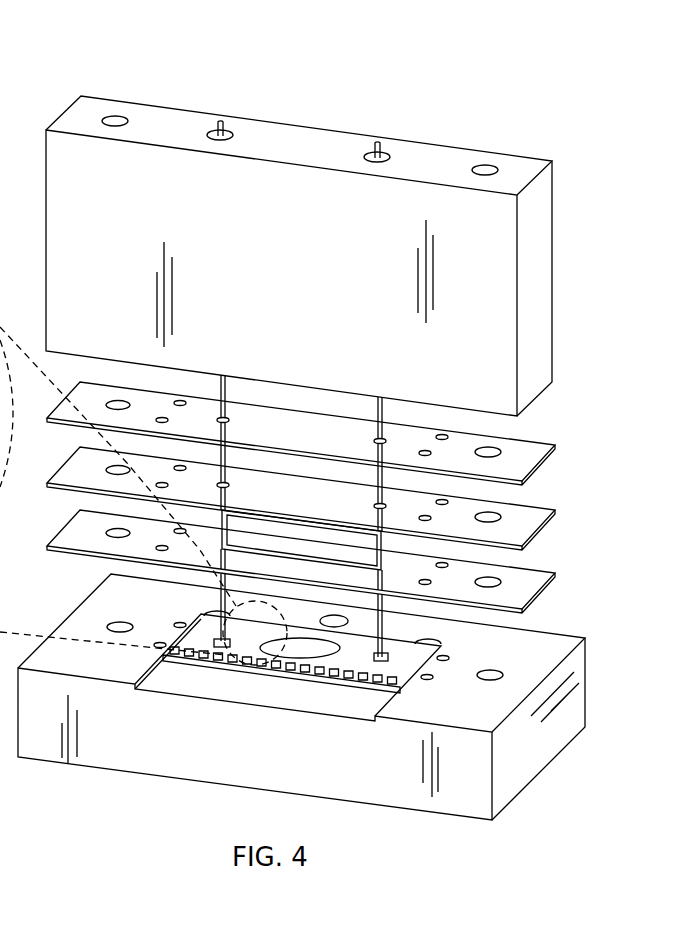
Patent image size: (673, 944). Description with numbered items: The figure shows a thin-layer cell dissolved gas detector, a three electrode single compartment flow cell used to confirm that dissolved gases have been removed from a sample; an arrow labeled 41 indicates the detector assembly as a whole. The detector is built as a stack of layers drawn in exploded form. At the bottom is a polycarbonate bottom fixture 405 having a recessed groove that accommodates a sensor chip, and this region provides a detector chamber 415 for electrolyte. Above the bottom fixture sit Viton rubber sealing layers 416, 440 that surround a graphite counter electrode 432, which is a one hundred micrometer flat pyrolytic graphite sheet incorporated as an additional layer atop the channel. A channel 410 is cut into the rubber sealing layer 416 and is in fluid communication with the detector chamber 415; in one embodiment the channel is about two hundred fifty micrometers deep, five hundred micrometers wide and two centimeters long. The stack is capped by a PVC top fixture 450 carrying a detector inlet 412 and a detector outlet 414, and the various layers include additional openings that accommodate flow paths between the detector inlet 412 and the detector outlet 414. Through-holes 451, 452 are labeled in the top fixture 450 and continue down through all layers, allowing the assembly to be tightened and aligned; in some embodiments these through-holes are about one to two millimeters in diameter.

The bottom fixture 405 is at (575, 695).
The channel 410 is at (295, 552).
The detector inlet 412 is at (222, 128).
The detector outlet 414 is at (380, 146).
The detector chamber 415 is at (253, 668).
The rubber sealing layer 416 is at (543, 580).
The counter electrode 432 is at (530, 520).
The rubber sealing layer 440 is at (530, 452).
The top fixture 450 is at (510, 237).
The through-hole 451 is at (115, 117).
The through-hole 452 is at (485, 167).
The assembly 41 is at (626, 288).